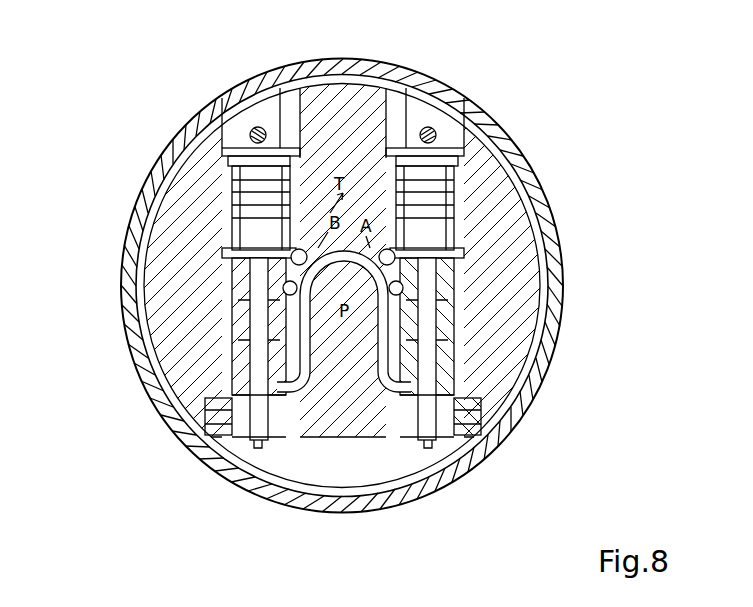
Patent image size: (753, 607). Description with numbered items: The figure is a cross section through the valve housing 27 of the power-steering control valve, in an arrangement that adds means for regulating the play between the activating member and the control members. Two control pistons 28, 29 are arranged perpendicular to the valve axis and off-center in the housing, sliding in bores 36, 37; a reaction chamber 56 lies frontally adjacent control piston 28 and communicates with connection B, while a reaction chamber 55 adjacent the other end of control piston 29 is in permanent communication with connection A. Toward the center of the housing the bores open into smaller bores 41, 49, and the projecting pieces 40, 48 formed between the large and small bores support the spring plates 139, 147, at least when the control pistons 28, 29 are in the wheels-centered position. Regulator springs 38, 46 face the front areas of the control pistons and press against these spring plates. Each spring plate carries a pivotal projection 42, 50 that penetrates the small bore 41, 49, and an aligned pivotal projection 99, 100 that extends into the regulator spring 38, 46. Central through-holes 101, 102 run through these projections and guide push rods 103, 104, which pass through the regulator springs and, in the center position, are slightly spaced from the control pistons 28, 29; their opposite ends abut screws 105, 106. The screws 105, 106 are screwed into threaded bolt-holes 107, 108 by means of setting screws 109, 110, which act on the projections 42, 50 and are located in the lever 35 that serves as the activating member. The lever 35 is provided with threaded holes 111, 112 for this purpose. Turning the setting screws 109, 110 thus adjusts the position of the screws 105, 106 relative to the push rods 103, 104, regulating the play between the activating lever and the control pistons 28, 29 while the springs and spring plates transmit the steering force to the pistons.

The valve housing 27 is at (345, 108).
The control piston 28 is at (228, 185).
The control piston 29 is at (466, 152).
The lever 35 is at (330, 440).
The bore 36 is at (222, 205).
The bore 37 is at (462, 165).
The regulator spring 38 is at (216, 225).
The projection piece 40 is at (236, 368).
The bore 41 is at (284, 440).
The pivotal projection 42 is at (232, 378).
The regulator spring 46 is at (468, 200).
The projecting piece 48 is at (452, 362).
The bore 49 is at (404, 440).
The pivotal projection 50 is at (445, 378).
The reaction chamber 55 is at (441, 220).
The reaction chamber 56 is at (284, 283).
The pivotal projection 99 is at (222, 255).
The pivotal projection 100 is at (470, 250).
The central through-hole 101 is at (228, 298).
The central through-hole 102 is at (465, 268).
The push rod 103 is at (245, 283).
The push rod 104 is at (400, 150).
The screw 105 is at (258, 445).
The screw 106 is at (442, 440).
The threaded bolt-hole 107 is at (240, 440).
The threaded bolt-hole 108 is at (465, 428).
The setting screw 109 is at (225, 432).
The setting screw 110 is at (433, 445).
The threaded hole 111 is at (215, 405).
The threaded hole 112 is at (480, 417).
The spring plate 139 is at (242, 325).
The spring plate 147 is at (465, 305).